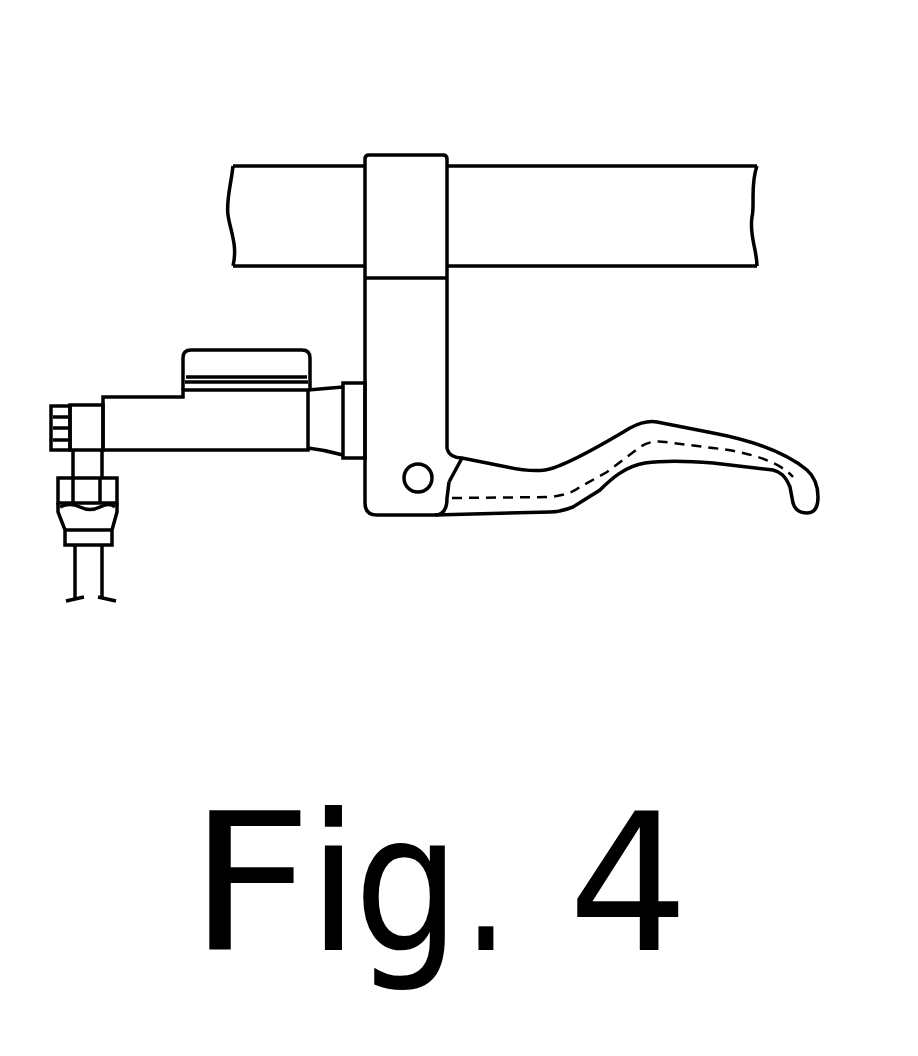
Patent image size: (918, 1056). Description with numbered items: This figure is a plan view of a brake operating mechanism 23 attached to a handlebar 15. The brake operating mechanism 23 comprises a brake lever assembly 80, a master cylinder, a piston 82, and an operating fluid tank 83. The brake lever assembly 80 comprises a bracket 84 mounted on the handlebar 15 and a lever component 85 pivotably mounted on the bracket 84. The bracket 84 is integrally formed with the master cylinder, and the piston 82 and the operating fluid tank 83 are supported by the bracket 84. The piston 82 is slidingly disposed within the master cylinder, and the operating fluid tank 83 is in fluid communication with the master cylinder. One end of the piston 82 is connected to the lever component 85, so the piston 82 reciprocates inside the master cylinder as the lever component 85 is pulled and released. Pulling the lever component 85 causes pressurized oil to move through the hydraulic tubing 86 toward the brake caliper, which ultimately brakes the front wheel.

The handlebar 15 is at (643, 166).
The brake operating mechanism 23 is at (526, 119).
The brake lever assembly 80 is at (630, 480).
The piston 82 is at (167, 453).
The operating fluid tank 83 is at (183, 360).
The bracket 84 is at (447, 350).
The lever component 85 is at (623, 430).
The hydraulic tubing 86 is at (102, 580).